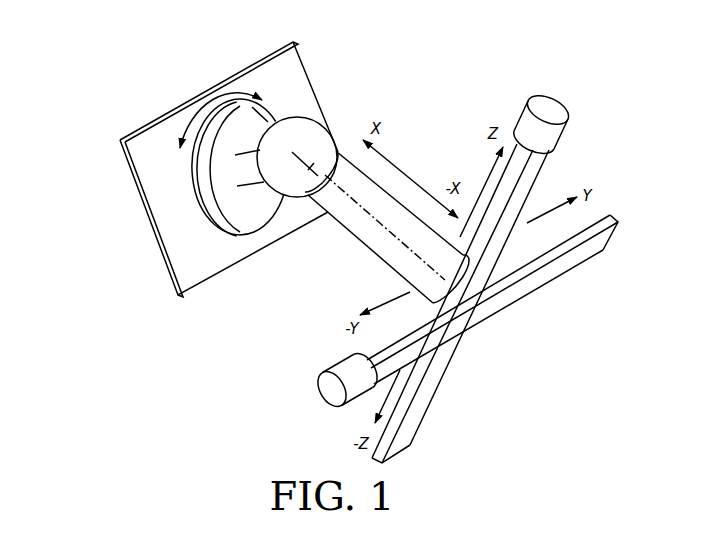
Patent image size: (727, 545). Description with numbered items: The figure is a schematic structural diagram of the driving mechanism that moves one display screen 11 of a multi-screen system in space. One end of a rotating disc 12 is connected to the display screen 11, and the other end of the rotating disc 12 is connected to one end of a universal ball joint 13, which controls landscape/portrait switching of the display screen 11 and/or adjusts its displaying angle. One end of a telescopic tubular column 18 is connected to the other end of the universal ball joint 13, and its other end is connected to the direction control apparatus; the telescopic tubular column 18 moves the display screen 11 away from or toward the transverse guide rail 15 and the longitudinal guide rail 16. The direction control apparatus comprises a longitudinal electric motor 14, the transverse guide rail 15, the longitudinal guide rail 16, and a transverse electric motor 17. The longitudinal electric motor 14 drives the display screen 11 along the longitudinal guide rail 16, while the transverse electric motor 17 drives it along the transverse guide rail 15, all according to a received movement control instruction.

The display screen 11 is at (157, 163).
The rotating disc 12 is at (227, 130).
The universal ball joint 13 is at (316, 142).
The longitudinal electric motor 14 is at (542, 127).
The transverse guide rail 15 is at (567, 268).
The longitudinal guide rail 16 is at (425, 399).
The transverse electric motor 17 is at (343, 381).
The telescopic tubular column 18 is at (373, 236).